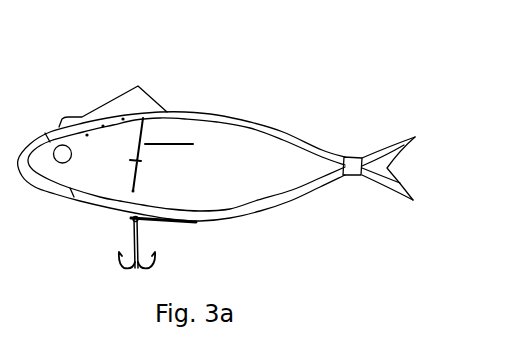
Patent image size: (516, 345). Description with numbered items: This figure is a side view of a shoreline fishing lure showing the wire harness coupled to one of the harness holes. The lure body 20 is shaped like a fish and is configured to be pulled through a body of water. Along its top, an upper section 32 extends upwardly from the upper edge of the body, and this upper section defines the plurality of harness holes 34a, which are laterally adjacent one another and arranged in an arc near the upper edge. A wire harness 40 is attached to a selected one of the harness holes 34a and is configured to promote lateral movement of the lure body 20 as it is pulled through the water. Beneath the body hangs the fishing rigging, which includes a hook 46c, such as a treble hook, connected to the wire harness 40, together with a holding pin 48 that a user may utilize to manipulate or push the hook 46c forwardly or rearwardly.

The lure body 20 is at (263, 174).
The upper section 32 is at (143, 102).
The harness holes 34a is at (102, 118).
The wire harness 40 is at (145, 144).
The hook 46c is at (122, 268).
The holding pin 48 is at (193, 224).